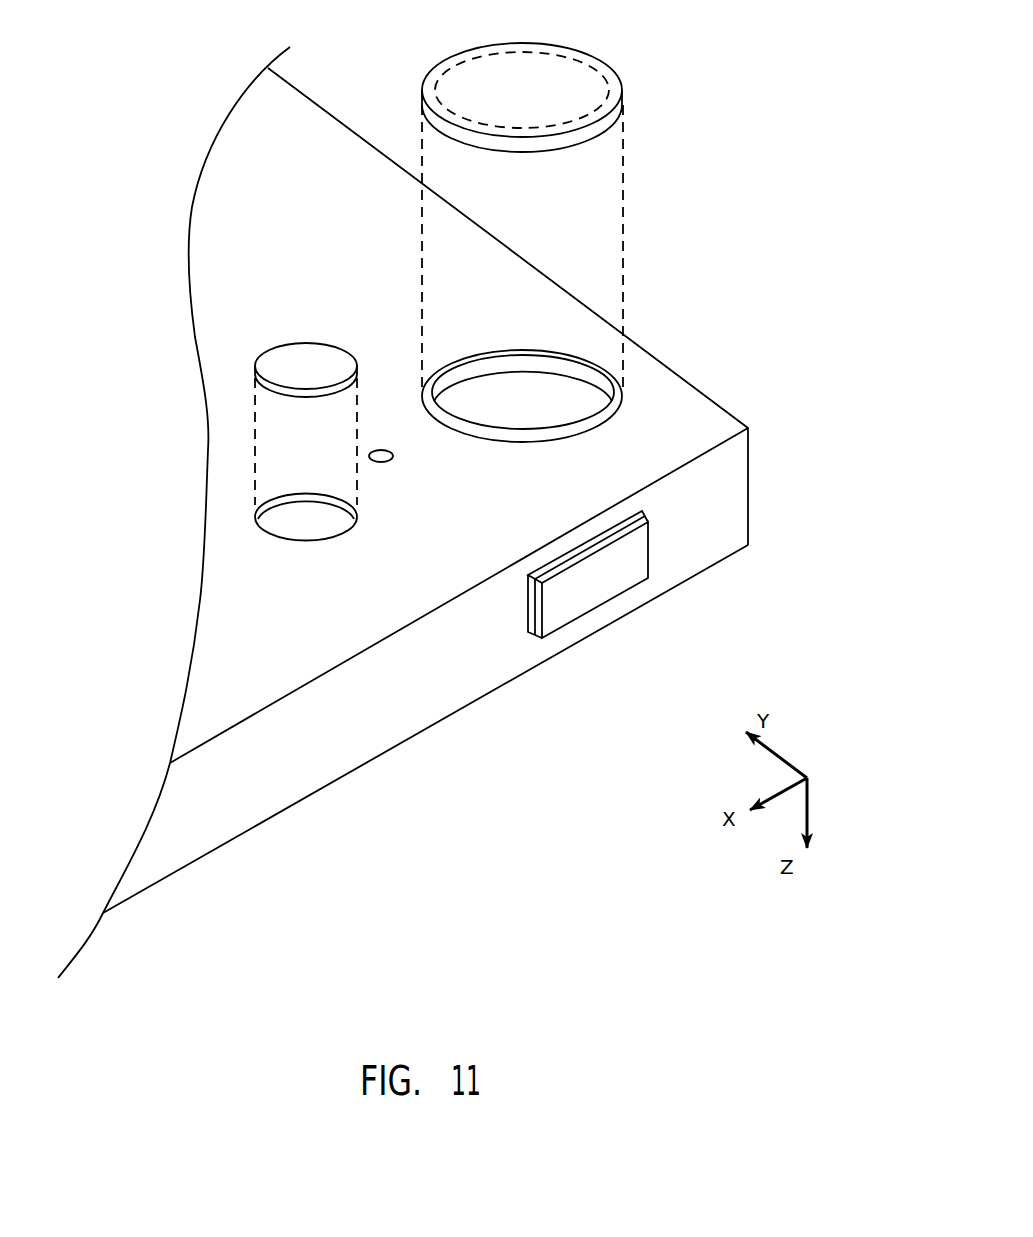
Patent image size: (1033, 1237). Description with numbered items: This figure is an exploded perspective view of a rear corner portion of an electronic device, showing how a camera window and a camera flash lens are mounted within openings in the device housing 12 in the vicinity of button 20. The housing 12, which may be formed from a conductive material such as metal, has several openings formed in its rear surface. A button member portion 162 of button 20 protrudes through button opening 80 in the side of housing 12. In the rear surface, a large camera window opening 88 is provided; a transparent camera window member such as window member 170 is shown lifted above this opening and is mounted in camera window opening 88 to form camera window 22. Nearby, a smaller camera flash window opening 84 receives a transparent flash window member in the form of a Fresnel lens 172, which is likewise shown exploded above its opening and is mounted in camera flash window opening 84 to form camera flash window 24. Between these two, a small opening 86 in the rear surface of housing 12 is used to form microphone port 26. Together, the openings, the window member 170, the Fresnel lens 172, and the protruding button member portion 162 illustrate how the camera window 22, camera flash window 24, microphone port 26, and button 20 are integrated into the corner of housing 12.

The housing 12 is at (395, 737).
The button 20 is at (440, 512).
The camera window 22 is at (560, 400).
The camera flash window 24 is at (299, 545).
The microphone port 26 is at (402, 432).
The button opening 80 is at (587, 596).
The camera flash window opening 84 is at (292, 528).
The opening 86 is at (380, 462).
The camera window opening 88 is at (541, 396).
The button member portion 162 is at (610, 587).
The window member 170 is at (572, 82).
The Fresnel lens 172 is at (305, 353).